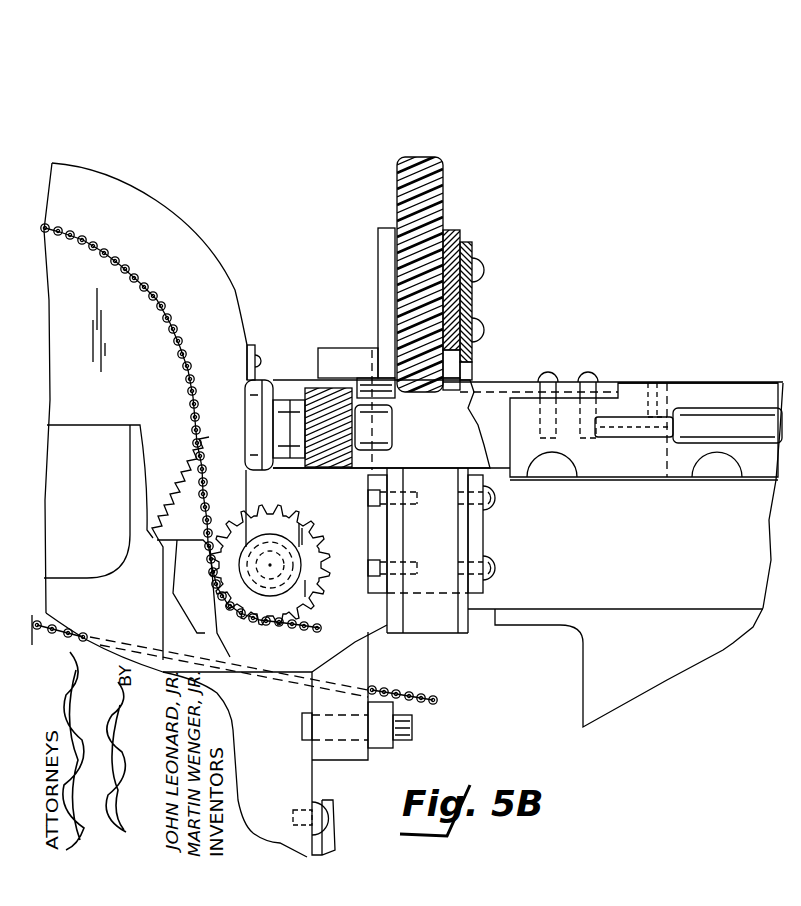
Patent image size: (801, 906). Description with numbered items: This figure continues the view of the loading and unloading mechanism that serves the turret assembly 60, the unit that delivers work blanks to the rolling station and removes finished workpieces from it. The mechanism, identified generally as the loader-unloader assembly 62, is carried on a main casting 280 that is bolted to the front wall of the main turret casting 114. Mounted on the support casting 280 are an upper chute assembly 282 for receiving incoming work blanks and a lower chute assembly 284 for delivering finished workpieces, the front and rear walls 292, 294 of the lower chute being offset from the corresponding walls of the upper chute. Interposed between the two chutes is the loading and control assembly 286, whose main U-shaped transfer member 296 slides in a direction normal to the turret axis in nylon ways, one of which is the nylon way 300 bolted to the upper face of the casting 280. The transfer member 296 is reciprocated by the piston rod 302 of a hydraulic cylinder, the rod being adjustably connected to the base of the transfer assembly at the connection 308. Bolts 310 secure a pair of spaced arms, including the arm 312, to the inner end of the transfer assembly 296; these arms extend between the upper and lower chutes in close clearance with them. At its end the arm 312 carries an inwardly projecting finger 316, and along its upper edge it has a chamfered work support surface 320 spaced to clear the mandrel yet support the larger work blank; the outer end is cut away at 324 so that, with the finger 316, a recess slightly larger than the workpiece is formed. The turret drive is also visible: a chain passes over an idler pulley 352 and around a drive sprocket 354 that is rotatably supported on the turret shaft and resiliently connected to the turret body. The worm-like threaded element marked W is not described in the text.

The turret assembly 60 is at (202, 252).
The drive sprocket 354 is at (158, 367).
The idler pulley 352 is at (297, 503).
The inwardly projecting finger 316 is at (293, 380).
The spaced arm 312 is at (445, 437).
The cut-away portion 324 is at (330, 378).
The chamfered work support surface 320 is at (357, 378).
The loader-unloader assembly 62 is at (375, 348).
The worm gear W is at (447, 173).
The upper chute assembly 282 is at (474, 255).
The loading and control assembly 286 is at (509, 382).
The nylon way 300 is at (628, 478).
The bolts 310 is at (588, 366).
The adjustable connection 308 is at (648, 403).
The transfer member 296 is at (688, 382).
The piston rod 302 is at (737, 412).
The front wall 292 is at (404, 481).
The rear wall 294 is at (458, 522).
The lower chute assembly 284 is at (484, 545).
The main casting 280 is at (740, 612).
The main turret casting 114 is at (313, 785).